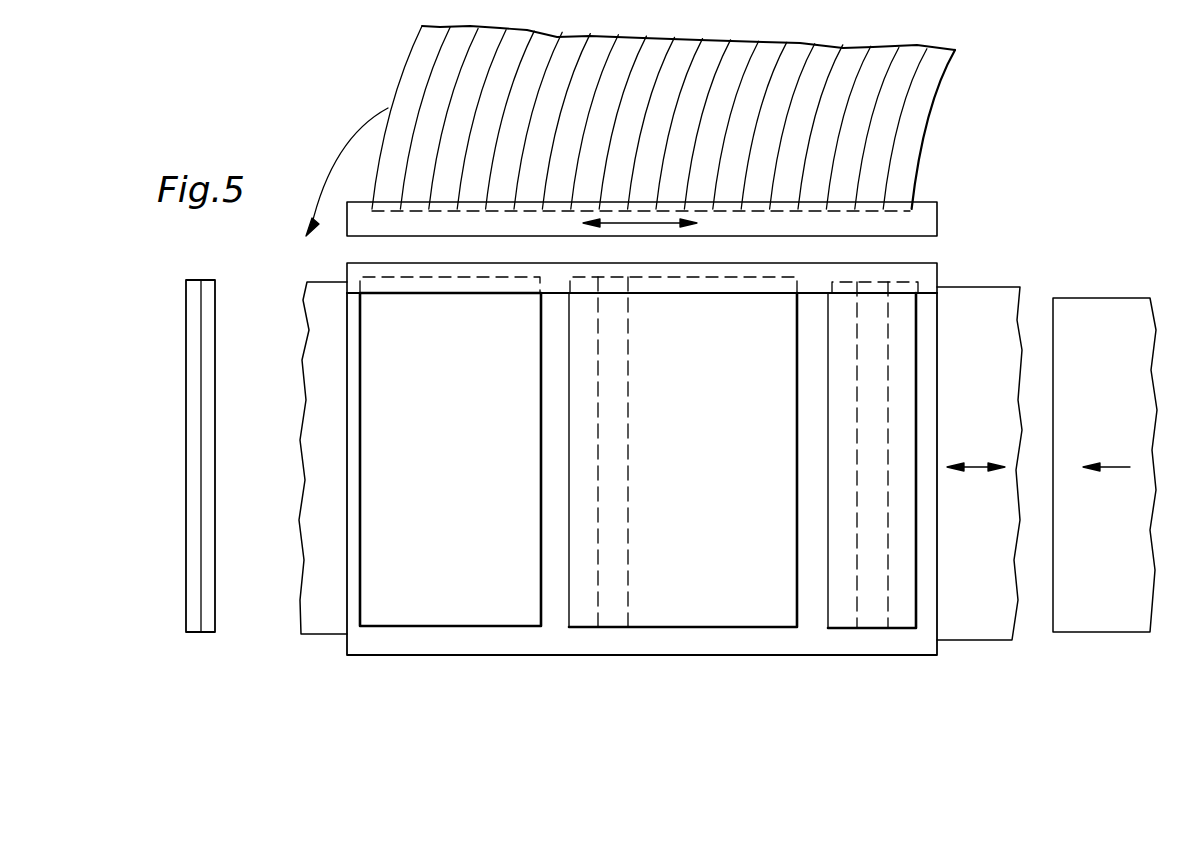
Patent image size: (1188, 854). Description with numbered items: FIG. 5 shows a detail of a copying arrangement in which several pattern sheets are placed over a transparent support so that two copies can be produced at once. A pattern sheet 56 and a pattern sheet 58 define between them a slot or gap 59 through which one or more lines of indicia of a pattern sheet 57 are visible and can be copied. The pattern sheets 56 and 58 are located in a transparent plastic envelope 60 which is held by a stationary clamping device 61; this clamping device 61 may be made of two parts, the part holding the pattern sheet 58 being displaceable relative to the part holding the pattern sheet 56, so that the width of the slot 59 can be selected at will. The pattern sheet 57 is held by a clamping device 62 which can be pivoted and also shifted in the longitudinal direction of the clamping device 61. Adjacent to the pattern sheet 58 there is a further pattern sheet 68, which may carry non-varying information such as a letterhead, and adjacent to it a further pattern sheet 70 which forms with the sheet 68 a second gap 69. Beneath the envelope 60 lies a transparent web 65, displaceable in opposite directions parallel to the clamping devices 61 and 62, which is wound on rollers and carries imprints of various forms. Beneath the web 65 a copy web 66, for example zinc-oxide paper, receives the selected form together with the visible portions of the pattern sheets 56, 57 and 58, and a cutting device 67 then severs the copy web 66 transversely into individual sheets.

The pattern sheet 56 is at (873, 620).
The pattern sheet 57 is at (912, 138).
The pattern sheet 58 is at (713, 613).
The slot or gap 59 is at (813, 613).
The transparent plastic envelope 60 is at (633, 643).
The stationary clamping device 61 is at (925, 277).
The clamping device 62 is at (923, 224).
The transparent web 65 is at (980, 623).
The copy web 66 is at (1093, 620).
The cutting device 67 is at (203, 625).
The further pattern sheet 68 is at (585, 615).
The second gap 69 is at (555, 615).
The further pattern sheet 70 is at (465, 613).